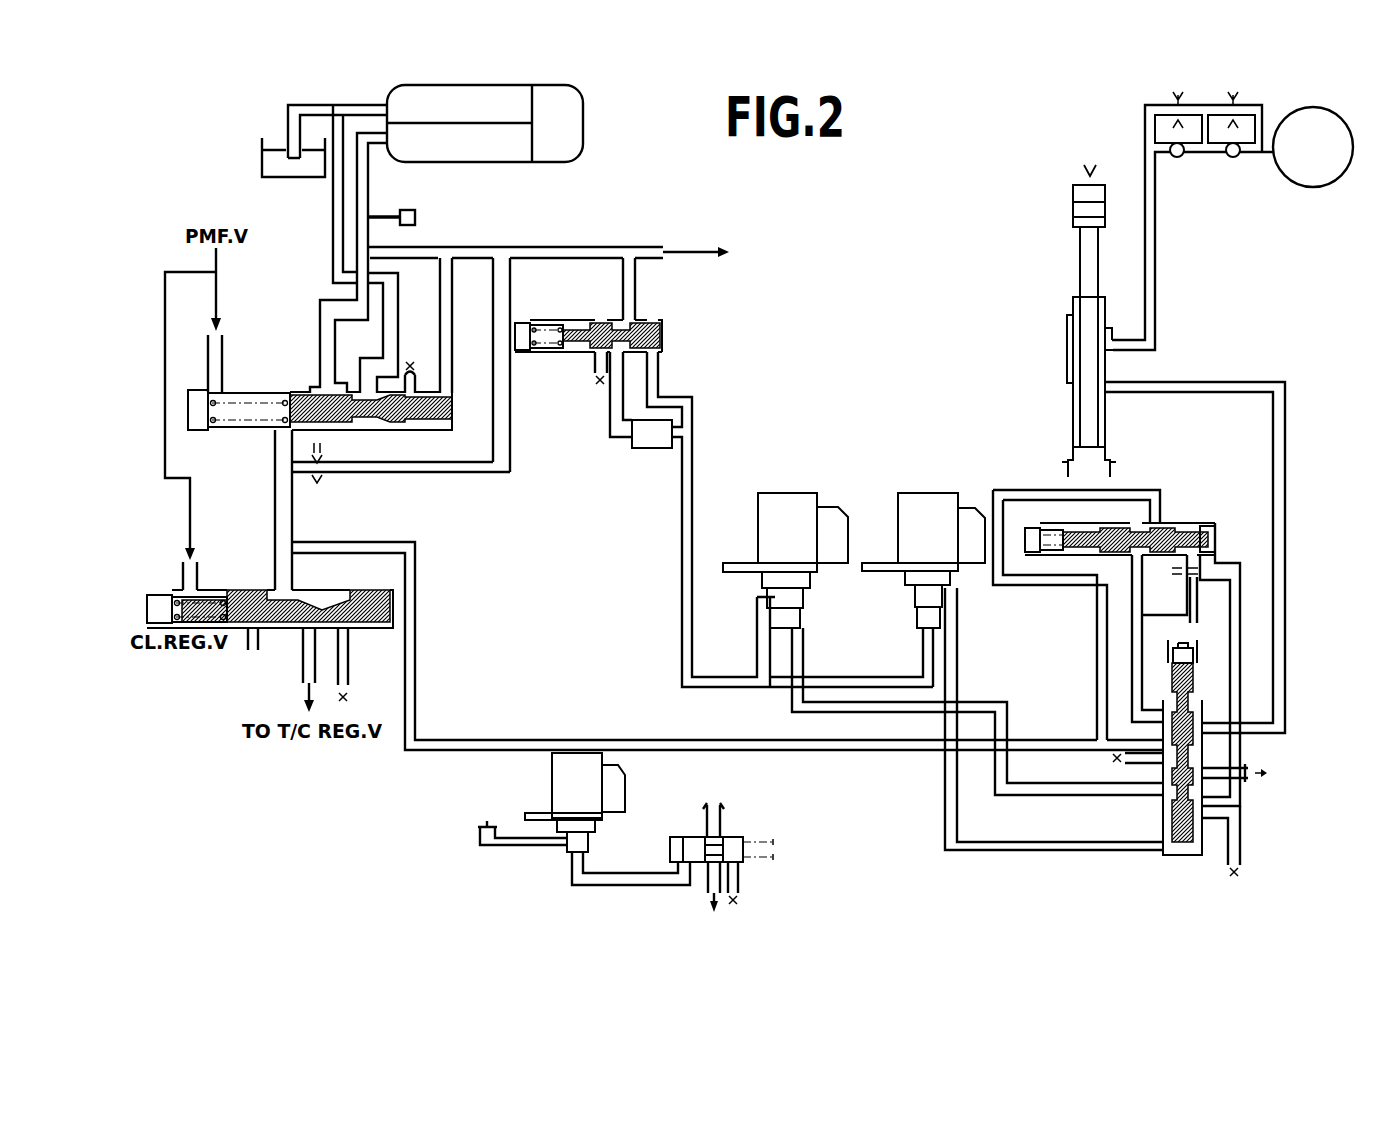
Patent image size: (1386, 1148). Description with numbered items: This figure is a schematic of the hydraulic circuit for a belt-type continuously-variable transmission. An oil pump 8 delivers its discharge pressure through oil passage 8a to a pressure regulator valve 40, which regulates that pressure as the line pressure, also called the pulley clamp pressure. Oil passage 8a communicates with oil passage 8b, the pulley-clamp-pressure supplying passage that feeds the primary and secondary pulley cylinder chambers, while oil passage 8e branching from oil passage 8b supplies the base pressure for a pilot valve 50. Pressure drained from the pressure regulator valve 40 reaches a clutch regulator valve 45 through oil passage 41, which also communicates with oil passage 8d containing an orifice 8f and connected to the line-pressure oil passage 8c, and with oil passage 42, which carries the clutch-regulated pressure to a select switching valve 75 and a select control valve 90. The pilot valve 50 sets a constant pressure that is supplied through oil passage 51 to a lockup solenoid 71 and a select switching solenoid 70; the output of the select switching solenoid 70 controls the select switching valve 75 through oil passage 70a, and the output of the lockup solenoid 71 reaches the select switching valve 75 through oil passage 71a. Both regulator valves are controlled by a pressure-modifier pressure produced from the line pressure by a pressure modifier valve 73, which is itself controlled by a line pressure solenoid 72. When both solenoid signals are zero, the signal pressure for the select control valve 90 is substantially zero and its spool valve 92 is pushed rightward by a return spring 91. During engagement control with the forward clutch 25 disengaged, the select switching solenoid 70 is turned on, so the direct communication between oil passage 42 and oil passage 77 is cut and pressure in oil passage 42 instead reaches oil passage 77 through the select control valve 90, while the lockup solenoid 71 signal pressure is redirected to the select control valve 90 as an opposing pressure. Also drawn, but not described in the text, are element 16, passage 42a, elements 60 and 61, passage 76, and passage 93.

The oil pump 8 is at (584, 132).
The oil passage 8a is at (363, 198).
The oil passage 8b is at (483, 250).
The line-pressure oil passage 8c is at (511, 423).
The oil passage 8d is at (403, 474).
The oil passage 8e is at (636, 293).
The orifice 8f is at (320, 490).
The pressure sensor 16 is at (416, 216).
The forward clutch 25 is at (1303, 197).
The pressure regulator valve 40 is at (431, 434).
The oil passage 41 is at (275, 498).
The oil passage 42 is at (416, 609).
The clutch pressure branch passage 42a is at (1055, 588).
The clutch regulator valve 45 is at (245, 659).
The pilot valve 50 is at (670, 332).
The oil passage 51 is at (693, 441).
The manual valve 60 is at (1056, 335).
The forward clutch pressure passage 61 is at (1157, 288).
The select switching solenoid 70 is at (926, 485).
The oil passage 70a is at (944, 810).
The lockup solenoid 71 is at (795, 485).
The oil passage 71a is at (853, 718).
The line pressure solenoid 72 is at (551, 788).
The pressure modifier valve 73 is at (750, 825).
The select switching valve 75 is at (1154, 805).
The select control pressure passage 76 is at (1241, 611).
The oil passage 77 is at (1288, 681).
The select control valve 90 is at (1181, 494).
The return spring 91 is at (1072, 528).
The spool valve 92 is at (1205, 523).
The select control valve output passage 93 is at (1131, 658).